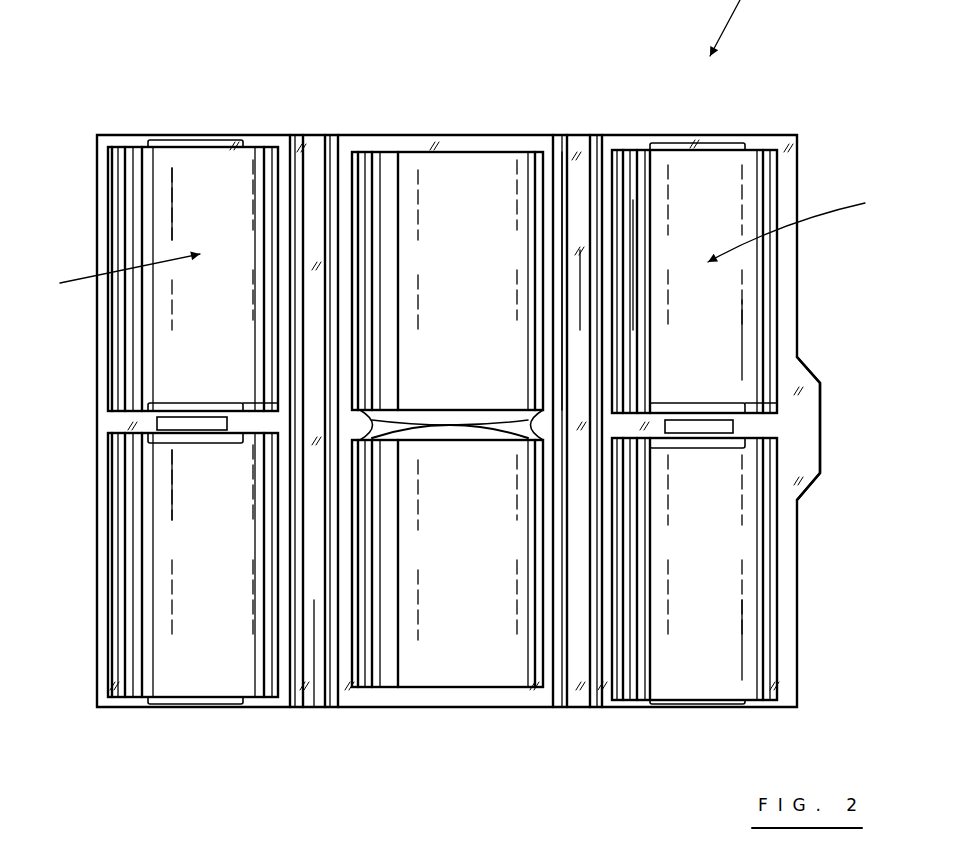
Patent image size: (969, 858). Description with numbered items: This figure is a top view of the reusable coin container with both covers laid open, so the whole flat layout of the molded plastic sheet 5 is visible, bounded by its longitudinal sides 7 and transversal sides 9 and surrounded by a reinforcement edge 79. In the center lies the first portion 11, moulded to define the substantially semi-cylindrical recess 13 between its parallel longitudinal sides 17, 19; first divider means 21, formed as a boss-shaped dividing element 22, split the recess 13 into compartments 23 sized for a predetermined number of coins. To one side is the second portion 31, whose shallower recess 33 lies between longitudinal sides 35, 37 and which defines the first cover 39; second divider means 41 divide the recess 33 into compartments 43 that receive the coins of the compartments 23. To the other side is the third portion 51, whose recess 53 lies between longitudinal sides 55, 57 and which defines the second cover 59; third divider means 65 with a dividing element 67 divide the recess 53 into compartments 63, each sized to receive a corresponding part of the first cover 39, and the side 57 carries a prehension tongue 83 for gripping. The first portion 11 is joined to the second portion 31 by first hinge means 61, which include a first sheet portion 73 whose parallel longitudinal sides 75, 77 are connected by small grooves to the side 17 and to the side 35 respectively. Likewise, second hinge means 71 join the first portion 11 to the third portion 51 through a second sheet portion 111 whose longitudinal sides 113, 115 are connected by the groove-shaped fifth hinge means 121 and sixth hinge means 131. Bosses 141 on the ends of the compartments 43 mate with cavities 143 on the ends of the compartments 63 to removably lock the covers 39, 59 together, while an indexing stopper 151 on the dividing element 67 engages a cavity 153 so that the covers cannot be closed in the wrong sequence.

The plastic sheet 5 is at (521, 140).
The longitudinal sides 7 is at (797, 296).
The transversal sides 9 is at (630, 135).
The first portion 11 is at (452, 134).
The recess 13 is at (448, 664).
The longitudinal side 17 is at (345, 244).
The longitudinal side 19 is at (568, 246).
The first divider means 21 is at (525, 444).
The dividing element 22 is at (527, 418).
The compartments 23 is at (405, 160).
The second portion 31 is at (255, 708).
The recess 33 is at (114, 270).
The longitudinal side 35 is at (287, 524).
The longitudinal side 37 is at (105, 599).
The first cover 39 is at (148, 710).
The second divider means 41 is at (261, 409).
The compartments 43 is at (197, 178).
The third portion 51 is at (760, 135).
The recess 53 is at (799, 223).
The longitudinal side 55 is at (640, 619).
The longitudinal side 57 is at (780, 579).
The second cover 59 is at (798, 136).
The first hinge means 61 is at (313, 133).
The compartments 63 is at (745, 341).
The third divider means 65 is at (752, 410).
The dividing element 67 is at (627, 412).
The second hinge means 71 is at (578, 133).
The first sheet portion 73 is at (318, 708).
The longitudinal side 75 is at (327, 708).
The longitudinal side 77 is at (313, 708).
The reinforcement edge 79 is at (792, 614).
The prehension tongue 83 is at (805, 432).
The second sheet portion 111 is at (585, 708).
The longitudinal side 113 is at (633, 279).
The longitudinal side 115 is at (580, 314).
The fifth hinge means 121 is at (572, 556).
The sixth hinge means 131 is at (613, 559).
The boss 141 is at (210, 140).
The cavity 143 is at (720, 152).
The indexing stopper 151 is at (697, 430).
The cavity 153 is at (176, 427).